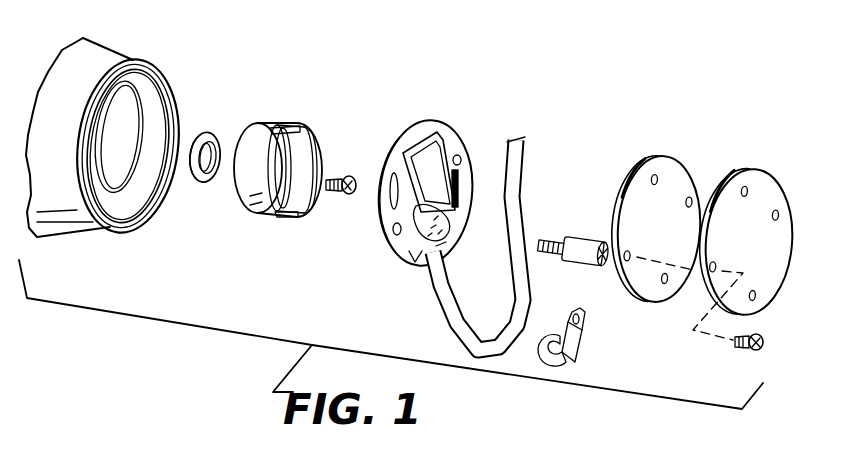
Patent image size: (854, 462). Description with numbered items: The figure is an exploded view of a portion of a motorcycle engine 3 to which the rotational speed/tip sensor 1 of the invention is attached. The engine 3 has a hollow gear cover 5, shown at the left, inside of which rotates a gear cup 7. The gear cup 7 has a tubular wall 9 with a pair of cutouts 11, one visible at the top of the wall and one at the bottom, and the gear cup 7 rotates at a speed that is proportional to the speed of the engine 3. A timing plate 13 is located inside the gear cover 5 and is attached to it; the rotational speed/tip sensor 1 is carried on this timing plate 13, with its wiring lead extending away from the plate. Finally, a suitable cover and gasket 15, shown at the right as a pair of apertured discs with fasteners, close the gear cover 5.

The rotational speed/tip sensor 1 is at (405, 161).
The motorcycle engine 3 is at (203, 232).
The gear cover 5 is at (98, 48).
The gear cup 7 is at (243, 128).
The tubular wall 9 is at (243, 190).
The cutouts 11 is at (274, 128).
The timing plate 13 is at (447, 130).
The cover and gasket 15 is at (772, 190).